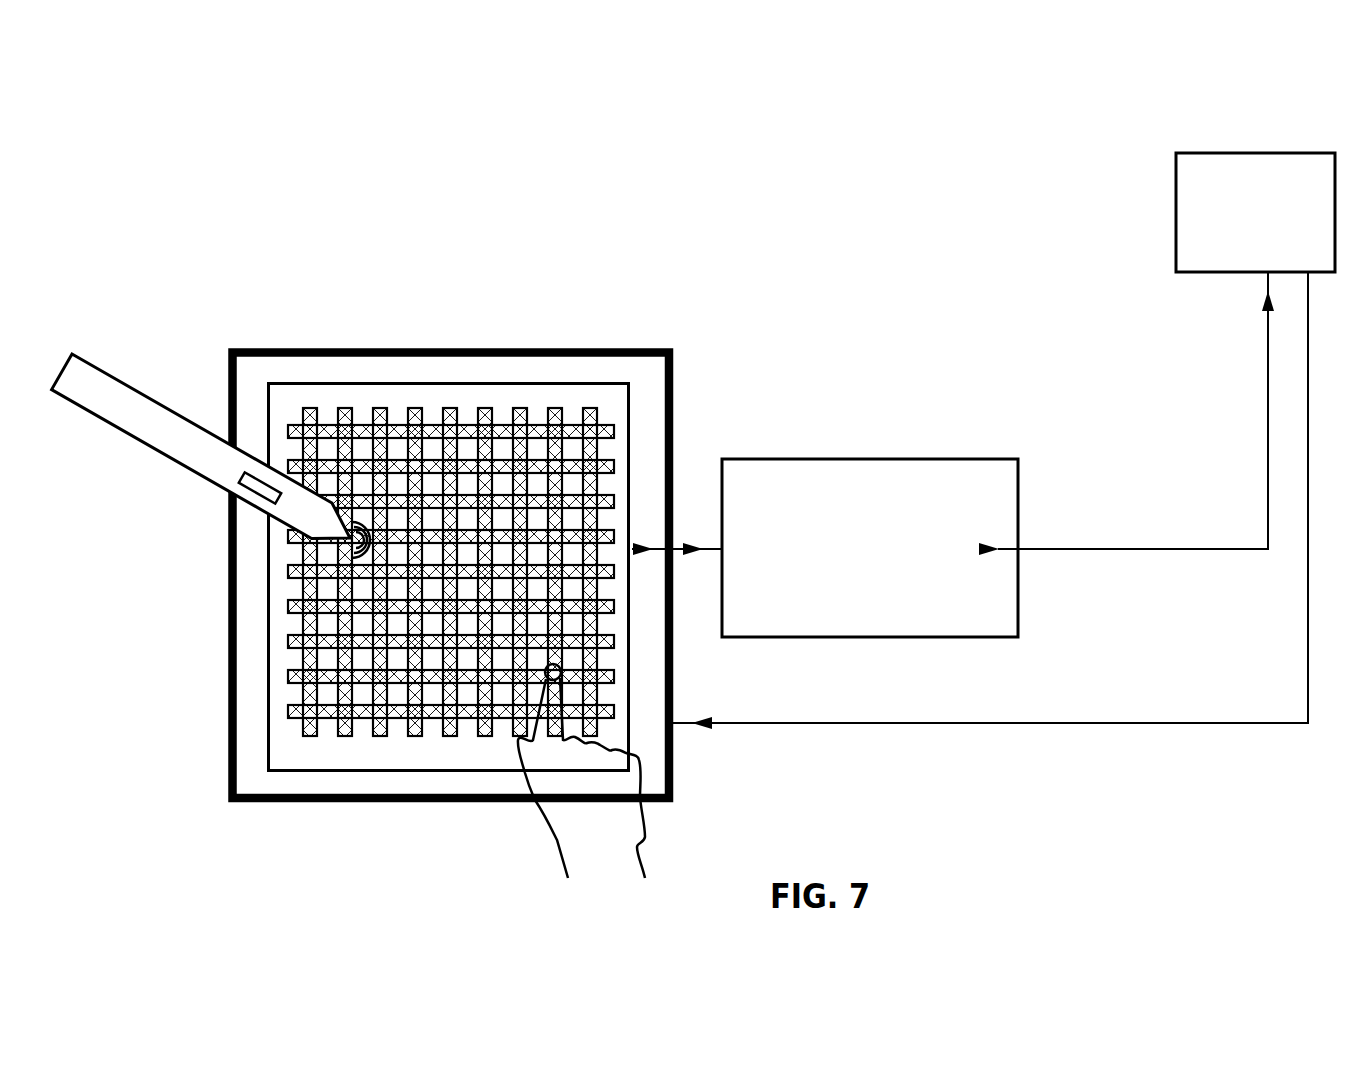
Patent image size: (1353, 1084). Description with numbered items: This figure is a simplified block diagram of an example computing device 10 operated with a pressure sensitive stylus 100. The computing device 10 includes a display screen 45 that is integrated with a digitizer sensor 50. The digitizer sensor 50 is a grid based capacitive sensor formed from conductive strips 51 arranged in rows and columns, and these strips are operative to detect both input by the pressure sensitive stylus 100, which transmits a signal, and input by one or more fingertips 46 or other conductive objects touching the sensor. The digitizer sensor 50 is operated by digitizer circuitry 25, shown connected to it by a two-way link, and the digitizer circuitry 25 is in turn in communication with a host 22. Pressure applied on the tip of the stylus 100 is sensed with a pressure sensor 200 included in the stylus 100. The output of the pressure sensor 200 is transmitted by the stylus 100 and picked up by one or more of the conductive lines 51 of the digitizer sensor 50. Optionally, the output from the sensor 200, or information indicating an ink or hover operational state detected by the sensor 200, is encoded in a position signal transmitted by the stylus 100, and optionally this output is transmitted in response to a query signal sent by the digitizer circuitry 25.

The computing device 10 is at (446, 252).
The host 22 is at (1229, 153).
The digitizer circuitry 25 is at (952, 459).
The display screen 45 is at (585, 349).
The fingertips 46 is at (547, 672).
The digitizer sensor 50 is at (637, 437).
The conductive strips 51 is at (523, 409).
The pressure sensitive stylus 100 is at (197, 425).
The pressure sensor 200 is at (230, 492).